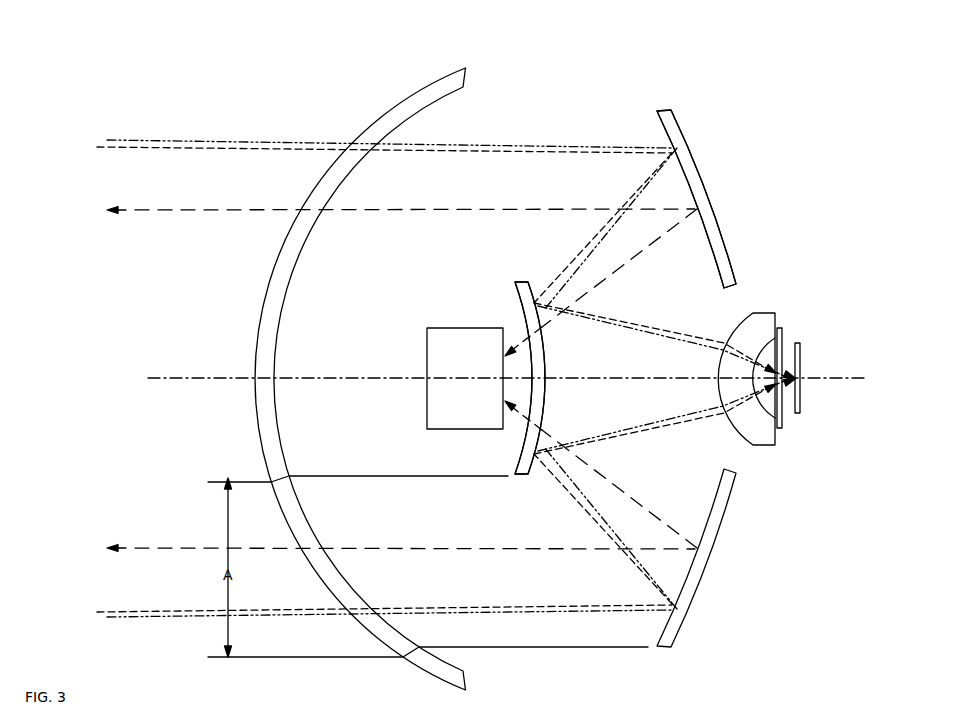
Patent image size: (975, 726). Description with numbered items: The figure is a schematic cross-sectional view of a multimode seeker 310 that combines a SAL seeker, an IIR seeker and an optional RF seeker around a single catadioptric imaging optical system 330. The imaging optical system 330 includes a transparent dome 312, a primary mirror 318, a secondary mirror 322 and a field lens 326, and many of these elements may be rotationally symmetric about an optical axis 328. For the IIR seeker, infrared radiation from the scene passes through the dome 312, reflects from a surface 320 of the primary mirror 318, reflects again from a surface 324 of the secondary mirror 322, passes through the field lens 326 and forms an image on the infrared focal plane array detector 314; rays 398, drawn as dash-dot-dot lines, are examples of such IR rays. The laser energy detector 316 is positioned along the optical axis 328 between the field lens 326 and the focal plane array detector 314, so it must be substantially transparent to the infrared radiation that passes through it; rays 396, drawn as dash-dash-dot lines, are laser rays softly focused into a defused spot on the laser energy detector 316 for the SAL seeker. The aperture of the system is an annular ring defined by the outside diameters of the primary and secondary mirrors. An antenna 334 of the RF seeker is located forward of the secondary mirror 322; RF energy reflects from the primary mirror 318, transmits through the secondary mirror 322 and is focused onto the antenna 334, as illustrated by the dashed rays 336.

The multimode seeker 310 is at (897, 76).
The transparent dome 312 is at (417, 90).
The infrared focal plane array detector 314 is at (800, 369).
The laser energy detector 316 is at (782, 427).
The primary mirror 318 is at (692, 152).
The surface of the primary mirror 320 is at (702, 243).
The secondary mirror 322 is at (515, 285).
The surface of the secondary mirror 324 is at (556, 357).
The field lens 326 is at (768, 313).
The optical axis 328 is at (185, 375).
The imaging optical system 330 is at (562, 122).
The antenna 334 is at (465, 378).
The RF rays 336 is at (203, 210).
The laser rays 396 is at (190, 147).
The IR rays 398 is at (198, 140).